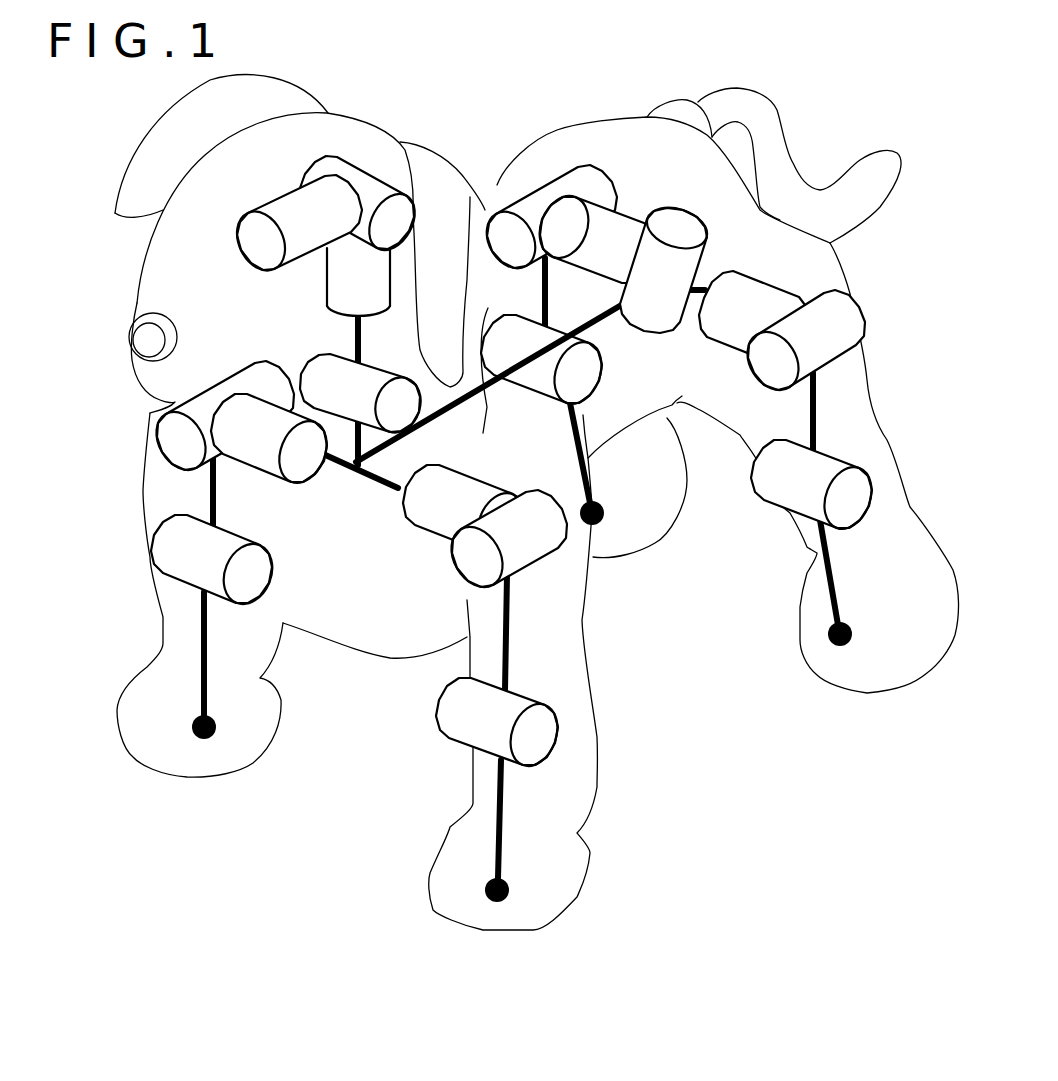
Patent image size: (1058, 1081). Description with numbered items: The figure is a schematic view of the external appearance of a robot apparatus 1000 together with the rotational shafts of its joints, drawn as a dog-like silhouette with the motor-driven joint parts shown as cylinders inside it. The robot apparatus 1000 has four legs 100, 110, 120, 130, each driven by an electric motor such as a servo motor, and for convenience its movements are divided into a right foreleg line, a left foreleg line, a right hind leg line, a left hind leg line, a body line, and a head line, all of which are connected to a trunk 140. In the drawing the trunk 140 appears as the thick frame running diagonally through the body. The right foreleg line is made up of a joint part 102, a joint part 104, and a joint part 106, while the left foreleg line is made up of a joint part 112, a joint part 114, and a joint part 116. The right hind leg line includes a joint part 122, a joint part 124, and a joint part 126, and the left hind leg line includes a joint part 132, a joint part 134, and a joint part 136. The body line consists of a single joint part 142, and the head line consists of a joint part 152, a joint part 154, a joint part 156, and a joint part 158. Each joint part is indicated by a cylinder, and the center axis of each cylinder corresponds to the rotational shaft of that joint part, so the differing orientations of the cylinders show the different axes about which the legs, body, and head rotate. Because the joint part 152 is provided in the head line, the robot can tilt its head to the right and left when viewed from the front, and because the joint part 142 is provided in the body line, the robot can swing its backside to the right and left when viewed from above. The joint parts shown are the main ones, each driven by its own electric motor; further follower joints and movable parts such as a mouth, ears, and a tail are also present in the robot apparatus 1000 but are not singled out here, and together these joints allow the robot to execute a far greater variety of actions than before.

The robot apparatus 1000 is at (910, 917).
The leg 100 is at (143, 695).
The joint part 102 is at (310, 467).
The joint part 104 is at (222, 395).
The joint part 106 is at (263, 575).
The leg 110 is at (577, 780).
The joint part 112 is at (467, 487).
The joint part 114 is at (543, 500).
The joint part 116 is at (520, 710).
The leg 120 is at (642, 530).
The joint part 122 is at (610, 227).
The joint part 124 is at (577, 187).
The joint part 126 is at (583, 380).
The leg 130 is at (887, 673).
The joint part 132 is at (748, 293).
The joint part 134 is at (770, 367).
The joint part 136 is at (820, 470).
The trunk 140 is at (470, 197).
The joint part 142 is at (677, 227).
The joint part 152 is at (280, 210).
The joint part 154 is at (327, 167).
The joint part 156 is at (340, 268).
The joint part 158 is at (330, 372).